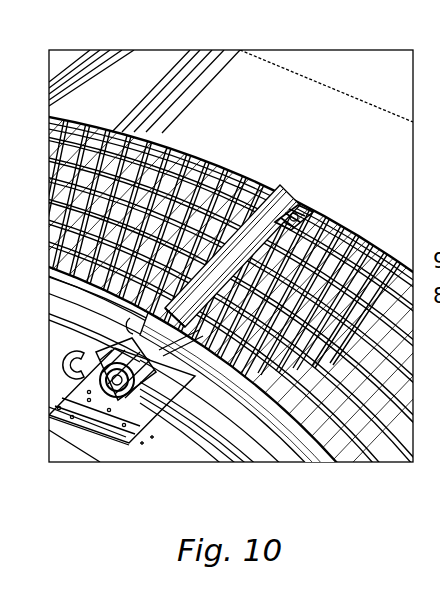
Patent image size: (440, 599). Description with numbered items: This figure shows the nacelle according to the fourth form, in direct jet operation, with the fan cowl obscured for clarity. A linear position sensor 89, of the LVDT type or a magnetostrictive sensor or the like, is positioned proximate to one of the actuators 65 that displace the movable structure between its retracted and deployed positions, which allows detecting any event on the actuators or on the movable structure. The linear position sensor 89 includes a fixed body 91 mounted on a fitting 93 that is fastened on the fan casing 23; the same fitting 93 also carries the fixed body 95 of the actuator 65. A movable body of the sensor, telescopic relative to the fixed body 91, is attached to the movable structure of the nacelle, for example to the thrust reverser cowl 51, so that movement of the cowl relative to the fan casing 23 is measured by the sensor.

The thrust reverser cowl 51 is at (316, 96).
The linear position sensor 89 is at (224, 249).
The actuator 65 is at (262, 240).
The fixed body 91 is at (140, 323).
The fixed body of the actuator 95 is at (88, 334).
The fitting 93 is at (185, 442).
The fan casing 23 is at (200, 450).